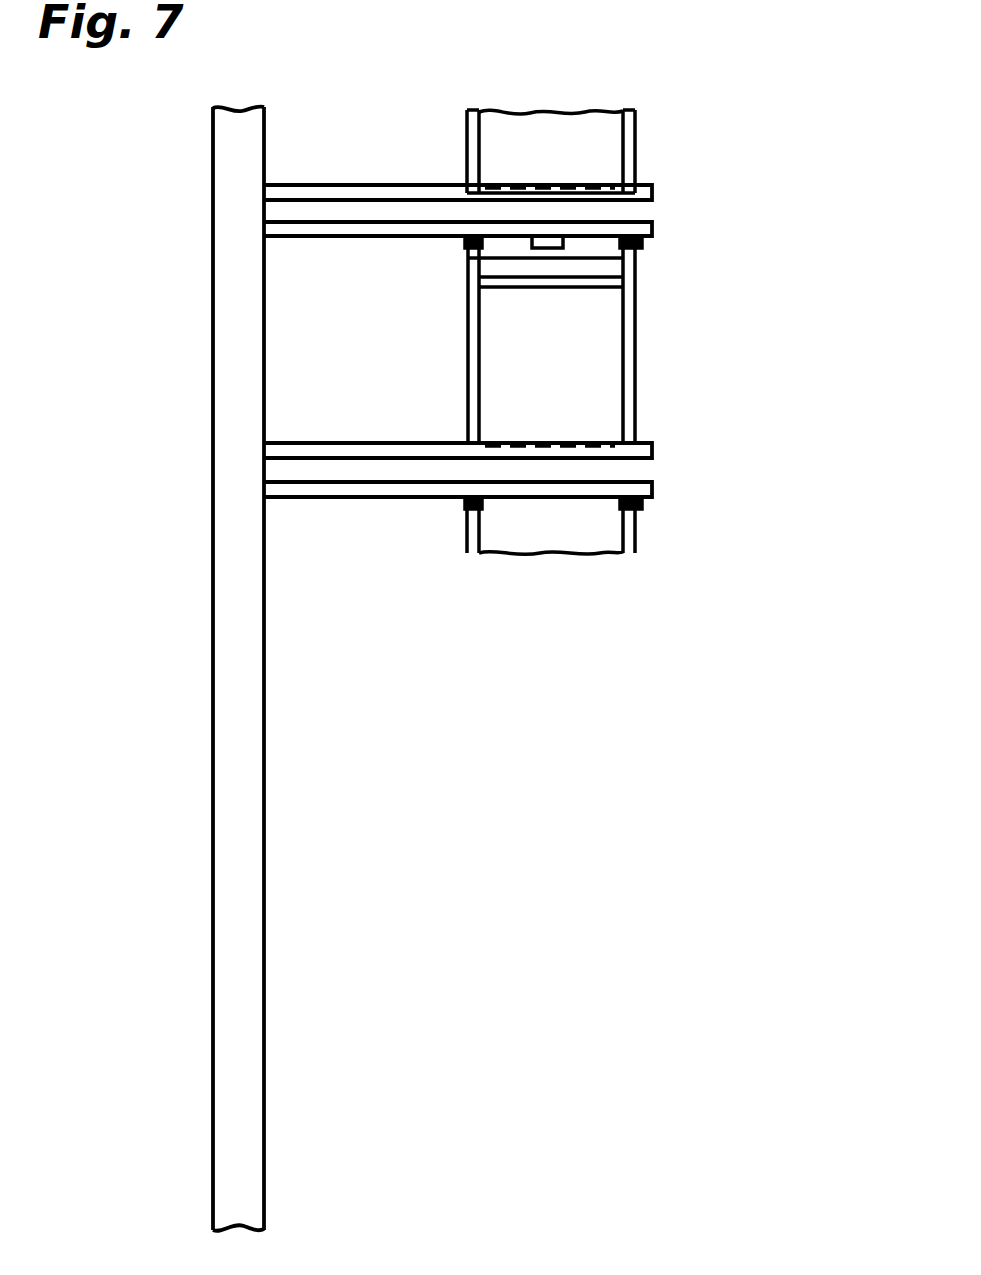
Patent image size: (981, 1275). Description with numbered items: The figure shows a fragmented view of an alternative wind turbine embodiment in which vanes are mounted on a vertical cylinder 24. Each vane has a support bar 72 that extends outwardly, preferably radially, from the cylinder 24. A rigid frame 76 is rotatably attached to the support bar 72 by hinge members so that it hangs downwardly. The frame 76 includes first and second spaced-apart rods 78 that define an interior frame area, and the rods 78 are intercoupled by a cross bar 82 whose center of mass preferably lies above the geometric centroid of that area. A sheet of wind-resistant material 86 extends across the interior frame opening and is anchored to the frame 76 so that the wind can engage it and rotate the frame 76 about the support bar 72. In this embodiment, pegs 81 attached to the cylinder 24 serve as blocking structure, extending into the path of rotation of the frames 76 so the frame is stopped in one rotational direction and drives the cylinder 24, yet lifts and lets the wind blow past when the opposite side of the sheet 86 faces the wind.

The cylinder 24 is at (232, 352).
The support bar 72 is at (655, 225).
The rigid frame 76 is at (660, 142).
The spaced-apart rods 78 is at (468, 267).
The pegs 81 is at (653, 193).
The cross bar 82 is at (530, 288).
The sheet of wind-resistant material 86 is at (502, 139).